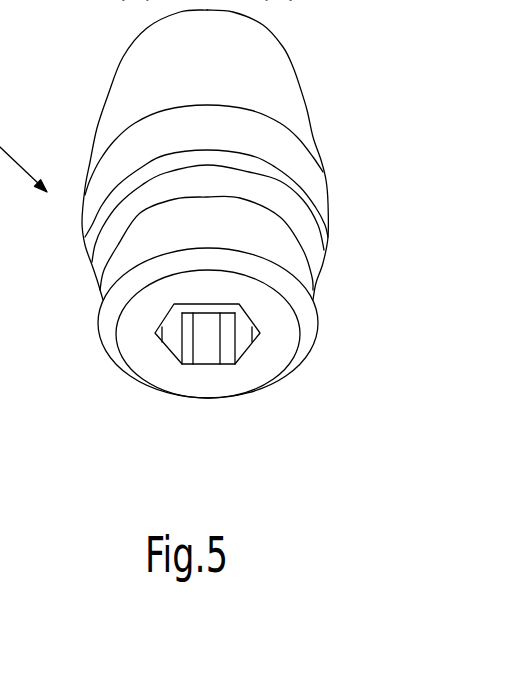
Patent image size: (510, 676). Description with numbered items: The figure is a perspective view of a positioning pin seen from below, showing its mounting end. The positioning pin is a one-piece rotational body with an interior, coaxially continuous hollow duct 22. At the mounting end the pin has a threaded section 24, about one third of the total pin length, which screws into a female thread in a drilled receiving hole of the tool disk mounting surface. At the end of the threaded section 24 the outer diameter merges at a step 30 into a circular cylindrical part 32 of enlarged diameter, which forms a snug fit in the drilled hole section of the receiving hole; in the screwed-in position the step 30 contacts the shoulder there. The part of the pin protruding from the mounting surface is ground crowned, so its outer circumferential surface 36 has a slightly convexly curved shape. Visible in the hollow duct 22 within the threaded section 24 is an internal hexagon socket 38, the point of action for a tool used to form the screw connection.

The hollow duct 22 is at (210, 310).
The threaded section 24 is at (285, 257).
The step 30 is at (293, 202).
The circular cylindrical part 32 is at (272, 148).
The outer circumferential surface 36 is at (238, 77).
The internal hexagon socket 38 is at (242, 327).